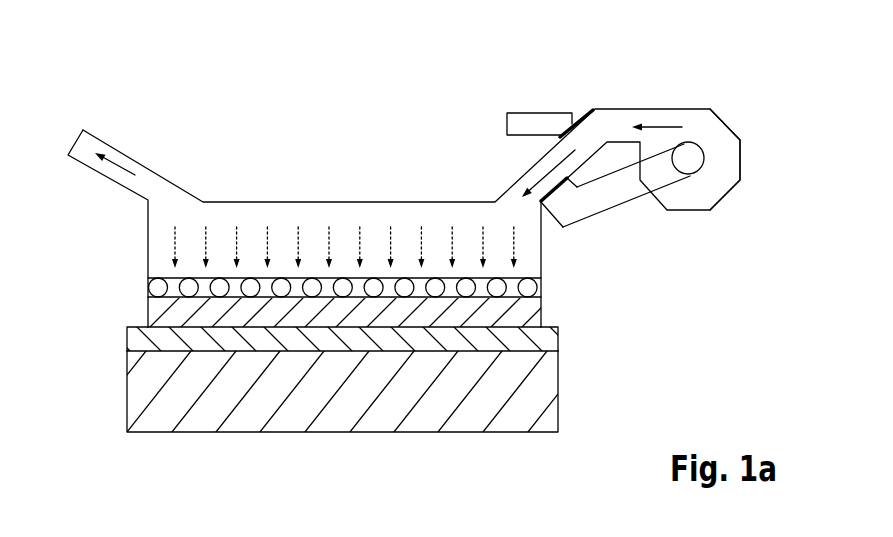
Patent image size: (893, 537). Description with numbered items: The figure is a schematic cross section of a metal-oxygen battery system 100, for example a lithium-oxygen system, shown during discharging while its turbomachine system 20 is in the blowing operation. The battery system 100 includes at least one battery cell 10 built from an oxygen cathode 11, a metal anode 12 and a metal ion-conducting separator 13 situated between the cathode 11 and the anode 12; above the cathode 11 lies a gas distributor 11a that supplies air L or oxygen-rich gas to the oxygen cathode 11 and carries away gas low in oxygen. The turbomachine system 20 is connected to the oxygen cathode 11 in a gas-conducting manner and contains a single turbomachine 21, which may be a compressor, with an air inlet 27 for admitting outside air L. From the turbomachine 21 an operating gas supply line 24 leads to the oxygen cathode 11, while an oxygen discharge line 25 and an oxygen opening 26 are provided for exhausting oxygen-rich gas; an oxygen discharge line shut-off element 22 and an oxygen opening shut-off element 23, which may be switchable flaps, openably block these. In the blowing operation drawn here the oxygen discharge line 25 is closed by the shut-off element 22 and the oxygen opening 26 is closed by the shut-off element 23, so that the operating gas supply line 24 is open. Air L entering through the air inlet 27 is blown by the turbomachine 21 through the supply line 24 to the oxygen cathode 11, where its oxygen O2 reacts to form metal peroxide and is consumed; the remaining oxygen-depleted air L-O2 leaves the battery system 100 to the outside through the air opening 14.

The metal-oxygen battery system 100 is at (398, 56).
The battery cell 10 is at (668, 291).
The oxygen cathode 11 is at (150, 310).
The gas distributor 11a is at (157, 287).
The metal anode 12 is at (135, 387).
The metal ion-conducting separator 13 is at (135, 340).
The air opening 14 is at (168, 200).
The turbomachine system 20 is at (704, 99).
The turbomachine 21 is at (690, 198).
The oxygen discharge line shut-off element 22 is at (555, 198).
The oxygen opening shut-off element 23 is at (561, 128).
The operating gas supply line 24 is at (525, 172).
The oxygen discharge line 25 is at (618, 198).
The oxygen opening 26 is at (572, 132).
The air inlet 27 is at (727, 120).
The air L is at (655, 127).
The oxygen O2 is at (173, 248).
The oxygen-depleted air L-O2 is at (110, 167).